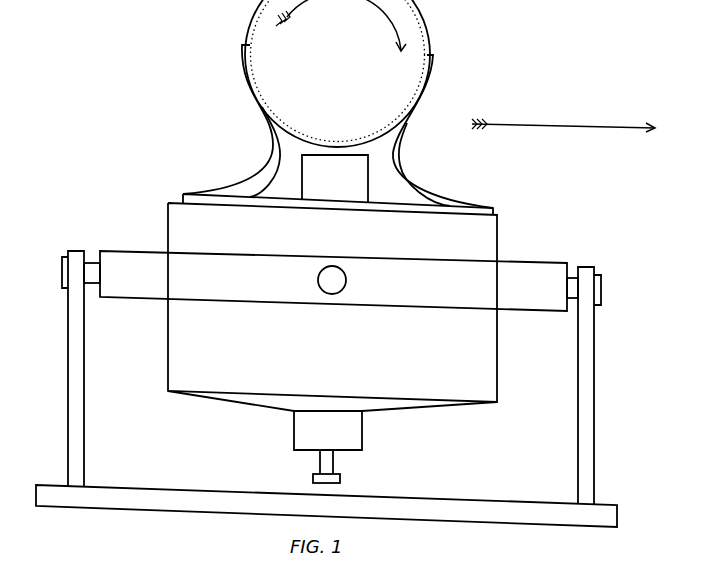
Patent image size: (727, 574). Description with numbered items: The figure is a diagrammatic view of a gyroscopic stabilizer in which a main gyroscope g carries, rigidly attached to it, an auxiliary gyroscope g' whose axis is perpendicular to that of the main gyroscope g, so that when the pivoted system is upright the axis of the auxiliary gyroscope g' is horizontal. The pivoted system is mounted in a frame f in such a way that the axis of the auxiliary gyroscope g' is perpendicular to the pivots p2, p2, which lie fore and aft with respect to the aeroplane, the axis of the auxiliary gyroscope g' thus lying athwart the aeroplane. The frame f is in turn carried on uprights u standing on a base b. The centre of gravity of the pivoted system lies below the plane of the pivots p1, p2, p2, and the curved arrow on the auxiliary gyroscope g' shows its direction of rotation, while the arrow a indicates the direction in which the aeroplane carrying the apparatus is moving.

The auxiliary gyroscope g' is at (337, 73).
The main gyroscope g is at (333, 264).
The frame f is at (333, 281).
The pivot p1 is at (333, 287).
The pivots p2 is at (92, 270).
The uprights u is at (77, 428).
The base plate b is at (195, 507).
The arrow a is at (563, 113).